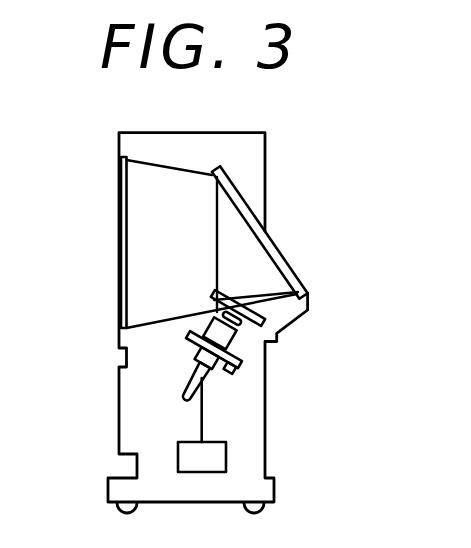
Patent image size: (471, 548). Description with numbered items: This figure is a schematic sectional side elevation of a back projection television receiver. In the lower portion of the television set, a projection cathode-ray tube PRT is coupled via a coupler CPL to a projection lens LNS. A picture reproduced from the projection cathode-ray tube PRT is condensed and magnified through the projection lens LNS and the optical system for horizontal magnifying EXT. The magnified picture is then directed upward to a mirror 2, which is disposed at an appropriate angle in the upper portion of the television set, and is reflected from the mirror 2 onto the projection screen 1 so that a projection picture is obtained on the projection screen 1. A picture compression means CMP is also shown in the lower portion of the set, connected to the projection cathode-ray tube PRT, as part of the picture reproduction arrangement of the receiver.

The projection screen 1 is at (119, 221).
The mirror 2 is at (243, 196).
The optical system for horizontal magnifying EXT is at (253, 306).
The projection lens LNS is at (236, 343).
The coupler CPL is at (240, 364).
The projection cathode-ray tube PRT is at (207, 373).
The picture compression means CMP is at (226, 455).